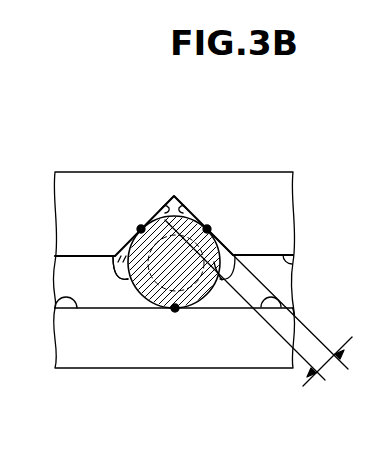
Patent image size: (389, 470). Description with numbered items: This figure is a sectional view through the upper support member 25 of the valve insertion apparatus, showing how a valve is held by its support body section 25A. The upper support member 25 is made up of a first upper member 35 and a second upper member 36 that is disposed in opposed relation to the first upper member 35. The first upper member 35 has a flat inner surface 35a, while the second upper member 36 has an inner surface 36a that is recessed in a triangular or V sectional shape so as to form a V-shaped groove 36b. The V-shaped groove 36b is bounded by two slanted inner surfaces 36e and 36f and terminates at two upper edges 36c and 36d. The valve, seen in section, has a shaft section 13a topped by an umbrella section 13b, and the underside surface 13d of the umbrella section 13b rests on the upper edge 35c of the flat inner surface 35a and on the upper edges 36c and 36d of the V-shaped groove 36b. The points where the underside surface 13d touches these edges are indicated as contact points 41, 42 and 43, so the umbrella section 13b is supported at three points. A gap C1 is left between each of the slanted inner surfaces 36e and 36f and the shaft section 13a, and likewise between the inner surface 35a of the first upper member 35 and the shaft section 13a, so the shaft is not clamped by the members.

The shaft section 13a is at (160, 310).
The umbrella section 13b is at (227, 262).
The underside surface 13d is at (224, 265).
The upper support member 25 is at (107, 152).
The support body section 25A is at (125, 165).
The first upper member 35 is at (120, 371).
The inner surface 35a is at (279, 294).
The upper edge 35c is at (60, 291).
The second upper member 36 is at (150, 168).
The inner surface 36a is at (289, 264).
The V-shaped groove 36b is at (118, 254).
The upper edge 36c is at (170, 203).
The upper edge 36d is at (184, 205).
The slanted inner surface 36e is at (106, 278).
The slanted inner surface 36f is at (232, 254).
The contact point 41 is at (178, 310).
The contact point 42 is at (124, 256).
The contact point 43 is at (208, 227).
The gap C1 is at (258, 315).